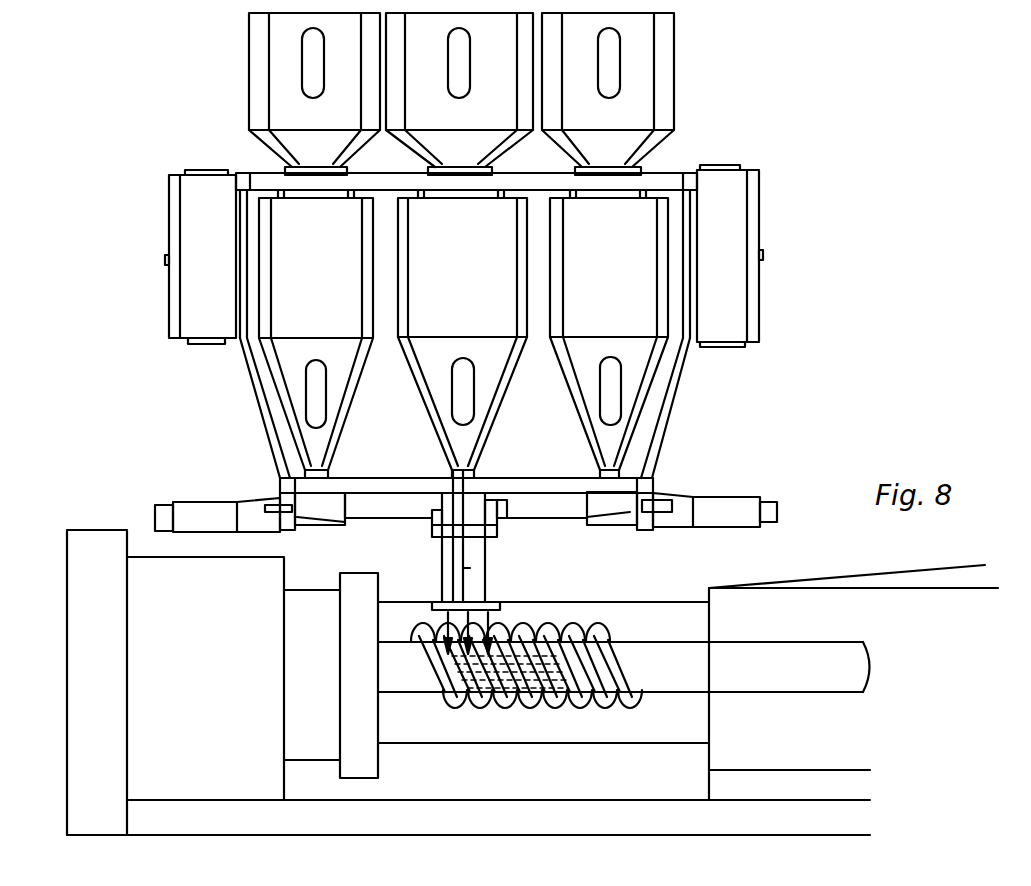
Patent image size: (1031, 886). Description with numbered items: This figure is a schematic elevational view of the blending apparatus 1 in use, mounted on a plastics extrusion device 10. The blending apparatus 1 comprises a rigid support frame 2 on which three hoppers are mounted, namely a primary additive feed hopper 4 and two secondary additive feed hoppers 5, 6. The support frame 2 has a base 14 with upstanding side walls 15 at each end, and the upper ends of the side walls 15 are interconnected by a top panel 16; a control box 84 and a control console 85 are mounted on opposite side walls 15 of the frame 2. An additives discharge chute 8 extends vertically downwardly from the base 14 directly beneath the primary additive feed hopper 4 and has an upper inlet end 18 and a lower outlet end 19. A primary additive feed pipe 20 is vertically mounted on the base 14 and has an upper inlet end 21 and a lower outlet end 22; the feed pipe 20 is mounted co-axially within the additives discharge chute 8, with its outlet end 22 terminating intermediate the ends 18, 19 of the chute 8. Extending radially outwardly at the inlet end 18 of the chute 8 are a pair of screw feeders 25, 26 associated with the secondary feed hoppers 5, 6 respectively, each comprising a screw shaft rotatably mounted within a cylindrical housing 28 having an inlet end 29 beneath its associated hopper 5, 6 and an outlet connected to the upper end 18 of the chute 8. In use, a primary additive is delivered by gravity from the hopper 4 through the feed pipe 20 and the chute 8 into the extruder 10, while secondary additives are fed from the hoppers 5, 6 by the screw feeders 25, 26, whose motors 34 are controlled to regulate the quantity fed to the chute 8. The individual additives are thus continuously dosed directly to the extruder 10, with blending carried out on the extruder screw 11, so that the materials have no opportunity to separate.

The blending apparatus 1 is at (772, 113).
The support frame 2 is at (671, 435).
The primary additive feed hopper 4 is at (468, 290).
The secondary additive feed hopper 5 is at (316, 292).
The secondary additive feed hopper 6 is at (620, 288).
The additives discharge chute 8 is at (496, 577).
The plastics extrusion device 10 is at (655, 597).
The extruder screw 11 is at (478, 710).
The base 14 is at (527, 488).
The side walls 15 is at (258, 402).
The top panel 16 is at (633, 180).
The upper inlet end 18 is at (435, 519).
The lower outlet end 19 is at (505, 598).
The primary additive feed pipe 20 is at (478, 492).
The upper inlet end 21 is at (480, 478).
The lower outlet end 22 is at (460, 566).
The screw feeder 25 is at (345, 528).
The screw feeder 26 is at (594, 530).
The cylindrical housing 28 is at (382, 508).
The inlet end 29 is at (323, 507).
The motors 34 is at (192, 508).
The control box 84 is at (728, 252).
The control console 85 is at (203, 273).